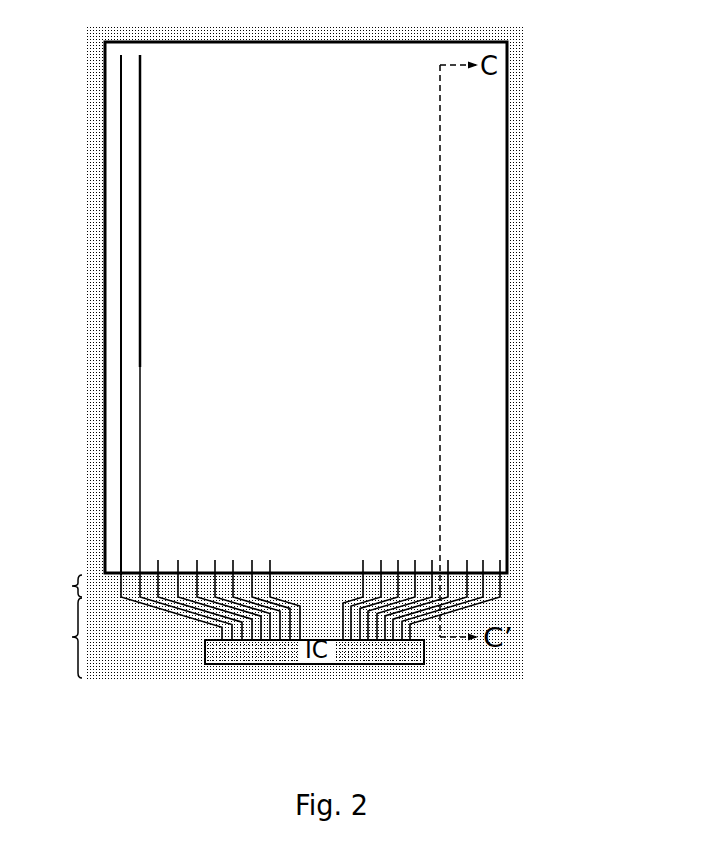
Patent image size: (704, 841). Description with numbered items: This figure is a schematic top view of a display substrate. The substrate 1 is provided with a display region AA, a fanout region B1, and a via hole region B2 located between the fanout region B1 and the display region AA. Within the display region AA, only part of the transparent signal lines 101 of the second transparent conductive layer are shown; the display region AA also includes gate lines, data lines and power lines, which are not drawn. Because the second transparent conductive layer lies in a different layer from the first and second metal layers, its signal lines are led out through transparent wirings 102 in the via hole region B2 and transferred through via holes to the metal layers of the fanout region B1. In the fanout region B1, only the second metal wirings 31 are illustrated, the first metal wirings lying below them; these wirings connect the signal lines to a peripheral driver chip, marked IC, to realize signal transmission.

The substrate 1 is at (366, 353).
The transparent signal lines 101 is at (120, 315).
The transparent wirings 102 is at (120, 583).
The second metal wirings 31 is at (480, 605).
The display region AA is at (475, 212).
The fanout region B1 is at (56, 638).
The via hole region B2 is at (56, 583).